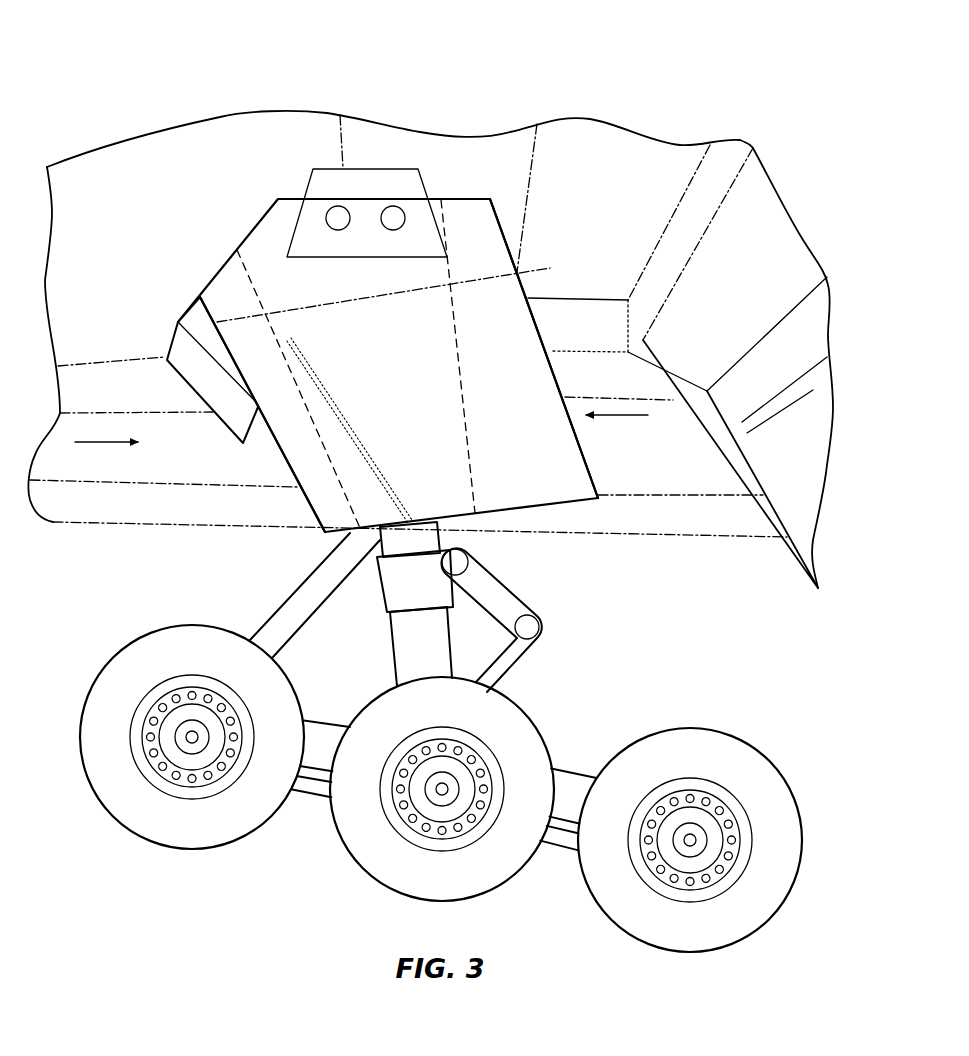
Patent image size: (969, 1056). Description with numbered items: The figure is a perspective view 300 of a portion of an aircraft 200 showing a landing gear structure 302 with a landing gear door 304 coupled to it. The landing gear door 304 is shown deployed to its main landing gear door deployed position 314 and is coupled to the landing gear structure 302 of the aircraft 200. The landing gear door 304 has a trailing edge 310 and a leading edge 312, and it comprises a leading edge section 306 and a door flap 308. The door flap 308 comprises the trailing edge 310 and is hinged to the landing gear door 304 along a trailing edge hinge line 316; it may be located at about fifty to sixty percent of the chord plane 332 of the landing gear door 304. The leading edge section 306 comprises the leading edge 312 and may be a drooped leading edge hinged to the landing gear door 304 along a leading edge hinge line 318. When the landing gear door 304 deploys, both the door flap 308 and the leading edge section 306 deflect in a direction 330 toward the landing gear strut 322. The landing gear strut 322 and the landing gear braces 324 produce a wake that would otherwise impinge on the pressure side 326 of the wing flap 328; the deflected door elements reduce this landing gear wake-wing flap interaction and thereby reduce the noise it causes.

The perspective view 300 is at (683, 46).
The aircraft 200 is at (137, 180).
The landing gear structure 302 is at (347, 884).
The landing gear door 304 is at (413, 357).
The leading edge section 306 is at (250, 355).
The door flap 308 is at (510, 365).
The trailing edge 310 is at (599, 480).
The leading edge 312 is at (300, 499).
The main landing gear door deployed position 314 is at (367, 261).
The trailing edge hinge line 316 is at (473, 485).
The leading edge hinge line 318 is at (342, 488).
The landing gear strut 322 is at (413, 635).
The landing gear braces 324 is at (323, 408).
The pressure side 326 is at (690, 352).
The wing flap 328 is at (790, 556).
The direction 330 is at (98, 444).
The chord plane 332 is at (480, 272).